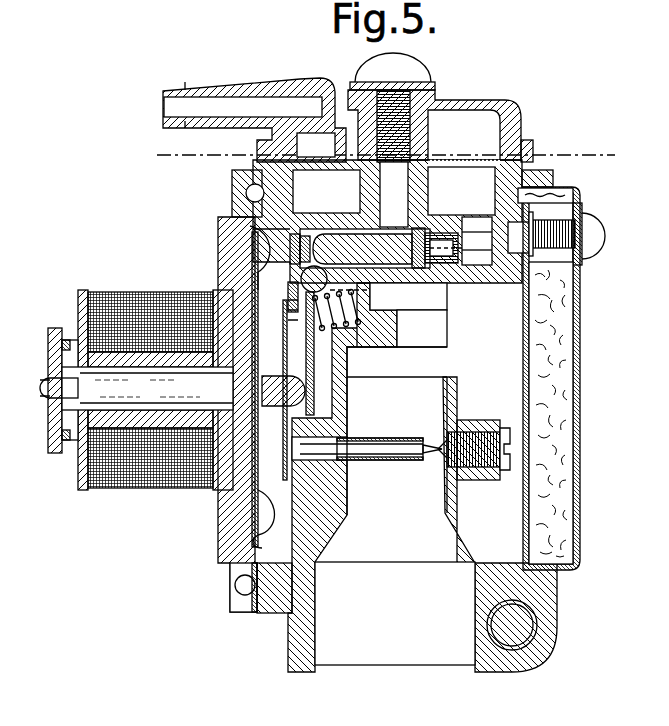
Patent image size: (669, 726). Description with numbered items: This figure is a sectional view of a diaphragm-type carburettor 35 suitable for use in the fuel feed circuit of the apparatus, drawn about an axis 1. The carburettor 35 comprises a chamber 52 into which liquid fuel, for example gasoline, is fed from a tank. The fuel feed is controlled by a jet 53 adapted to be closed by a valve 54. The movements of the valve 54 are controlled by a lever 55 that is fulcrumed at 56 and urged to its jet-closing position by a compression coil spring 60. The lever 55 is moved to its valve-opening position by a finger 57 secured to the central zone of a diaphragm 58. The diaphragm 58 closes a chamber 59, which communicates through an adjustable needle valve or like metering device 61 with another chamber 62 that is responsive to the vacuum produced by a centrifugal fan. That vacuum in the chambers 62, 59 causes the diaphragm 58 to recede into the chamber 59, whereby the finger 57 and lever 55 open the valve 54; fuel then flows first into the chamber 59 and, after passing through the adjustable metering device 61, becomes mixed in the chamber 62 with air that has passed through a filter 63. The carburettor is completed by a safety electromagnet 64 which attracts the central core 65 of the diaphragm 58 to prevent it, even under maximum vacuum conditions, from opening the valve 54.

The carburetor axis 1 is at (619, 151).
The diaphragm-type carburettor 35 is at (217, 236).
The chamber 52 is at (462, 128).
The jet 53 is at (450, 260).
The valve 54 is at (412, 226).
The lever 55 is at (312, 386).
The fulcrum 56 is at (327, 262).
The finger 57 is at (285, 492).
The diaphragm 58 is at (300, 283).
The chamber 59 is at (232, 512).
The compression coil spring 60 is at (358, 318).
The adjustable needle valve 61 is at (424, 447).
The chamber 62 is at (407, 488).
The filter 63 is at (575, 338).
The safety electromagnet 64 is at (133, 293).
The central core 65 is at (242, 367).